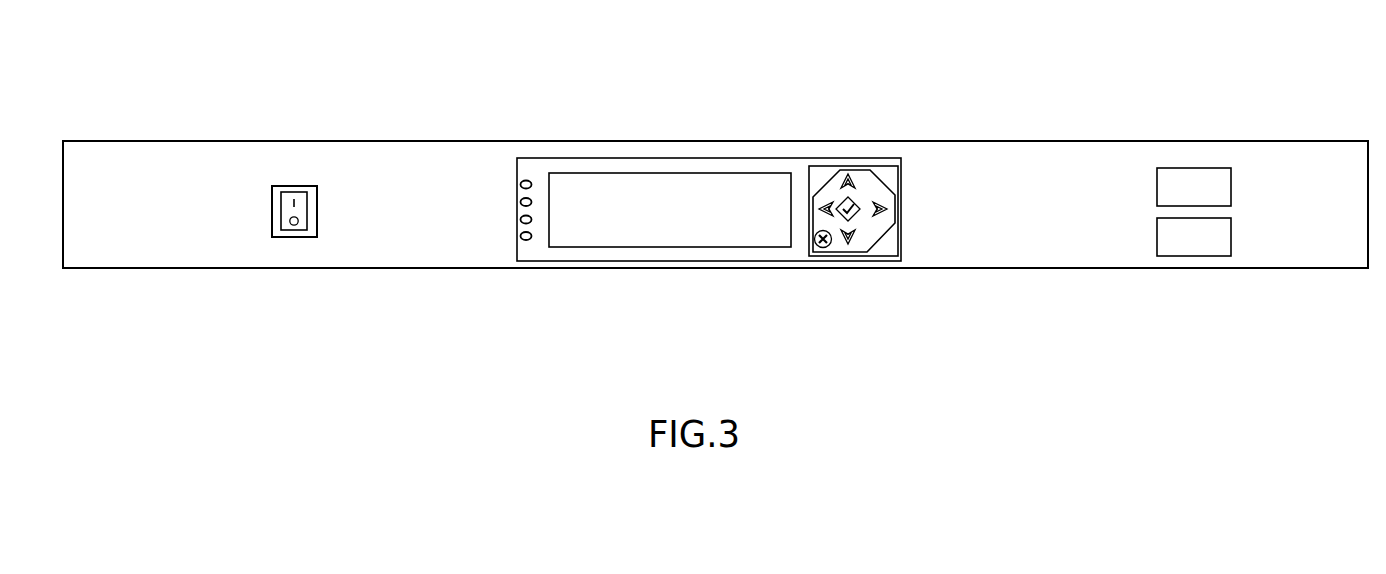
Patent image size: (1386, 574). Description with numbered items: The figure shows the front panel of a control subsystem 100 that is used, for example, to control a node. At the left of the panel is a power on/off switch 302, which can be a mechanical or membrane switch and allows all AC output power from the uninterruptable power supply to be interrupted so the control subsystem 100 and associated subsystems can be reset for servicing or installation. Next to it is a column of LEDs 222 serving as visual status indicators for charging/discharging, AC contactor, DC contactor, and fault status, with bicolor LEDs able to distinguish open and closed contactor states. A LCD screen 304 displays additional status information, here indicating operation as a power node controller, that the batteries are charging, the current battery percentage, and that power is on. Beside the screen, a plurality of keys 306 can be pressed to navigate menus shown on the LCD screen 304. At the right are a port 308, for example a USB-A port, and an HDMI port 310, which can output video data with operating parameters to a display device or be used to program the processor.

The control subsystem 100 is at (89, 140).
The power on/off switch 302 is at (297, 193).
The LEDs 222 is at (525, 182).
The LCD screen 304 is at (766, 180).
The keys 306 is at (888, 180).
The port 308 is at (1204, 168).
The HDMI port 310 is at (1222, 257).